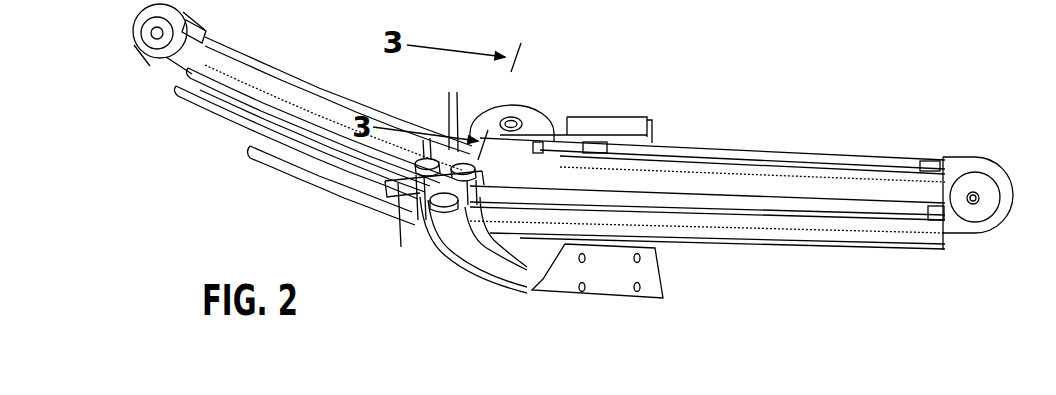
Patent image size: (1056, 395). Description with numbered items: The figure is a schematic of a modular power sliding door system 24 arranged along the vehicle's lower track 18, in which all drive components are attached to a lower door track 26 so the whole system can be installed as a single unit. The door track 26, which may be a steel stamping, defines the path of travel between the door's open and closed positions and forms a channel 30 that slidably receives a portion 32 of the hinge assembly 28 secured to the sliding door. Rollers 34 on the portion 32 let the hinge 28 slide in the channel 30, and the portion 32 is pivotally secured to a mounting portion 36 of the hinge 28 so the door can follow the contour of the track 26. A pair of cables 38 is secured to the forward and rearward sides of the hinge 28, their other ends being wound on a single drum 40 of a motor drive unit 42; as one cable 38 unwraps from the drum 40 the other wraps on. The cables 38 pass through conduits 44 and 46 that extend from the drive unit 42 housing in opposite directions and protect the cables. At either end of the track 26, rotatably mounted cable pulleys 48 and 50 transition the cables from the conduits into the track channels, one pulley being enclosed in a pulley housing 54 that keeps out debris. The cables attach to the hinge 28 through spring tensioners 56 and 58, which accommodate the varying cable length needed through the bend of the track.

The lower track 18 is at (836, 250).
The modular system 24 is at (833, 118).
The door track 26 is at (257, 158).
The hinge assembly 28 is at (667, 273).
The channel 30 is at (739, 218).
The portion 32 is at (400, 188).
The rollers 34 is at (455, 132).
The mounting portion 36 is at (484, 278).
The cables 38 is at (240, 120).
The drum 40 is at (548, 125).
The motor drive unit 42 is at (577, 108).
The conduit 44 is at (776, 152).
The conduit 46 is at (300, 87).
The cable pulley 48 is at (141, 50).
The cable pulley 50 is at (972, 220).
The pulley housing 54 is at (950, 158).
The spring tensioner 56 is at (528, 272).
The spring tensioner 58 is at (418, 187).